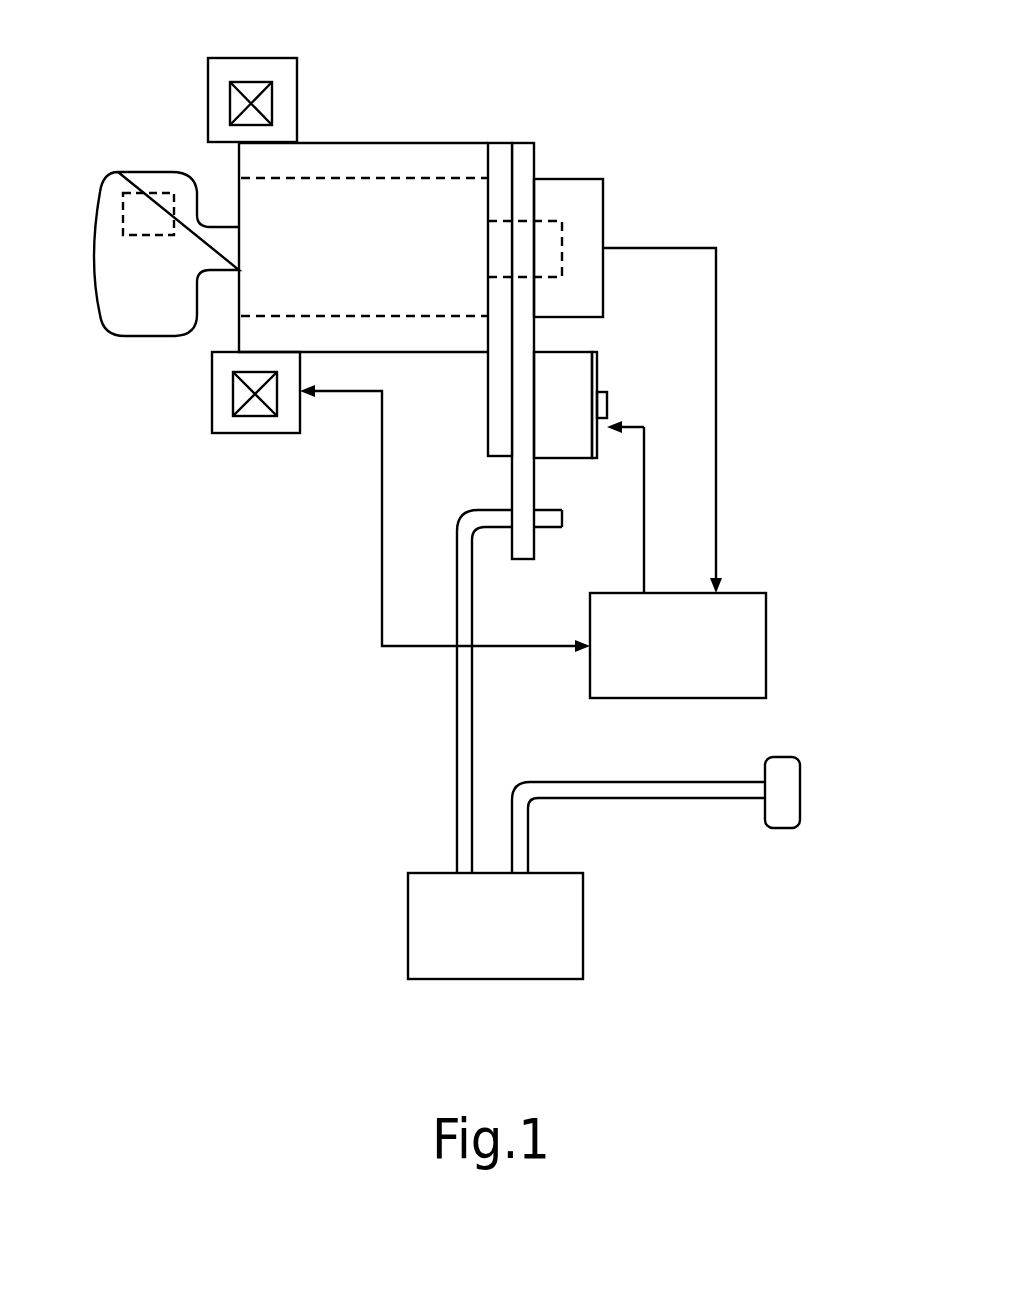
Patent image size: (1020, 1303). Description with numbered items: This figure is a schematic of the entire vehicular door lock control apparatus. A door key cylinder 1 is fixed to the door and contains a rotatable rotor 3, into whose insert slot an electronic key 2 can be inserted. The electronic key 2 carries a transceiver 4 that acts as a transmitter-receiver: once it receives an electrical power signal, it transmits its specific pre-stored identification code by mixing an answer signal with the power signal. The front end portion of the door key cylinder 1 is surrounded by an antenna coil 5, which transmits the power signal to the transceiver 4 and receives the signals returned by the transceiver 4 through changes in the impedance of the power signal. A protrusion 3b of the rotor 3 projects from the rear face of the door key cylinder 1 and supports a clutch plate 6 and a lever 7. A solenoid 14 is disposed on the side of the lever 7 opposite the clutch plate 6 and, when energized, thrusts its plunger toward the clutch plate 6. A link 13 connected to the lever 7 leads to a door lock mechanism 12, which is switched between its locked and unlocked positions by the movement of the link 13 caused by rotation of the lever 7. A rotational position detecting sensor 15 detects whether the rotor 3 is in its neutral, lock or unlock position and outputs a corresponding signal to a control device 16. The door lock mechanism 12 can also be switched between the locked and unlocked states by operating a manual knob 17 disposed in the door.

The door key cylinder 1 is at (400, 142).
The electronic key 2 is at (110, 175).
The rotor 3 is at (448, 178).
The protrusion 3b is at (543, 220).
The transceiver 4 is at (123, 224).
The antenna coil 5 is at (264, 433).
The clutch plate 6 is at (488, 397).
The lever 7 is at (535, 490).
The door lock mechanism 12 is at (583, 930).
The link 13 is at (472, 718).
The solenoid 14 is at (597, 374).
The rotational position detecting sensor 15 is at (603, 208).
The control device 16 is at (766, 655).
The manual knob 17 is at (800, 788).